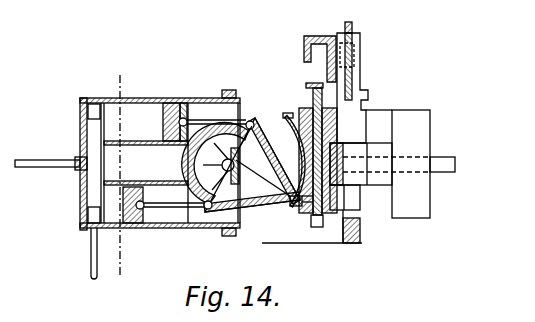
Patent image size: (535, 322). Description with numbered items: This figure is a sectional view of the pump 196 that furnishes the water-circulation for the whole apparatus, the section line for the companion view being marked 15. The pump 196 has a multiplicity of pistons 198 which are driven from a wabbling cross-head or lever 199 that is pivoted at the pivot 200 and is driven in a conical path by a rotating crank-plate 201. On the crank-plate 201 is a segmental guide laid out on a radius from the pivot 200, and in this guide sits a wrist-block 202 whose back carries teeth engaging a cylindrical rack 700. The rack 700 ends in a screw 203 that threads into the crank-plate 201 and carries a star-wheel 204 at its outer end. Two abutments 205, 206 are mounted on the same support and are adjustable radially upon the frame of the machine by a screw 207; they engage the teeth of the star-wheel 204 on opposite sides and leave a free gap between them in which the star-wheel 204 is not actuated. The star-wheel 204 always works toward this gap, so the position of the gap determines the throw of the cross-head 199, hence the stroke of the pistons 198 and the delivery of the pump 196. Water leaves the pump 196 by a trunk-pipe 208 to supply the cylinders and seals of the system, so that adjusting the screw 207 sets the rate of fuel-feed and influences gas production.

The section line 15— 15 is at (109, 173).
The pump 196 is at (221, 177).
The pistons 198 is at (175, 98).
The wabbling cross-head or lever 199 is at (253, 203).
The pivot 200 is at (222, 165).
The crank-plate 201 is at (335, 118).
The wrist-block 202 is at (292, 206).
The screw 203 is at (312, 96).
The star-wheel 204 is at (310, 83).
The abutment 205 is at (340, 78).
The abutment 206 is at (304, 48).
The screw 207 is at (352, 25).
The trunk-pipe 208 is at (43, 163).
The cylindrical rack 700 is at (330, 208).